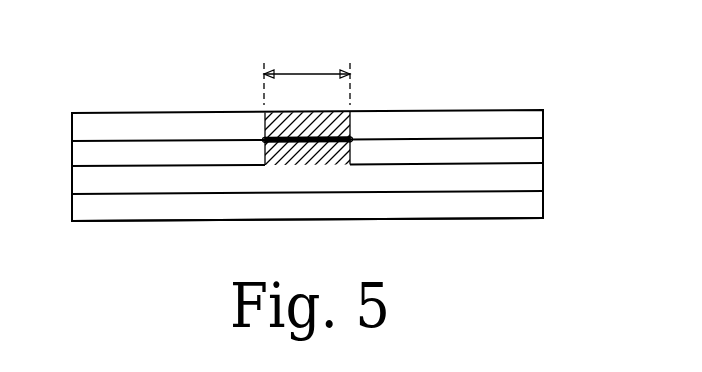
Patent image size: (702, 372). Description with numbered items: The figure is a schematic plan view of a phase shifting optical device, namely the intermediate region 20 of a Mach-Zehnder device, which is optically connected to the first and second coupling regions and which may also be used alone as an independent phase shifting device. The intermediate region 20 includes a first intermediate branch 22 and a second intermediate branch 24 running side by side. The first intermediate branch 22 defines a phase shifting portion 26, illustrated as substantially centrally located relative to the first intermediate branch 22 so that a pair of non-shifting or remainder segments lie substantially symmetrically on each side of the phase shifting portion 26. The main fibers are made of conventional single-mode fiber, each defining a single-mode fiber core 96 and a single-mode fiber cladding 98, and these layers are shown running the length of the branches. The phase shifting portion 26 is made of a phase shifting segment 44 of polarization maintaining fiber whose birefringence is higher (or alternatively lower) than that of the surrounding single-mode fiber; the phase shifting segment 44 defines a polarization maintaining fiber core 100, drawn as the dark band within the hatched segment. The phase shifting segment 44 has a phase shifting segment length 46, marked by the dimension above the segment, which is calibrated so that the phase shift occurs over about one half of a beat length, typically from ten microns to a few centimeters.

The intermediate region 20 is at (489, 69).
The first intermediate branch 22 is at (103, 127).
The second intermediate branch 24 is at (229, 211).
The phase shifting portion 26 is at (367, 122).
The phase shifting segment 44 is at (266, 139).
The phase shifting segment length 46 is at (303, 73).
The single-mode fiber core 96 is at (143, 140).
The single-mode fiber cladding 98 is at (530, 121).
The polarization maintaining fiber core 100 is at (352, 158).